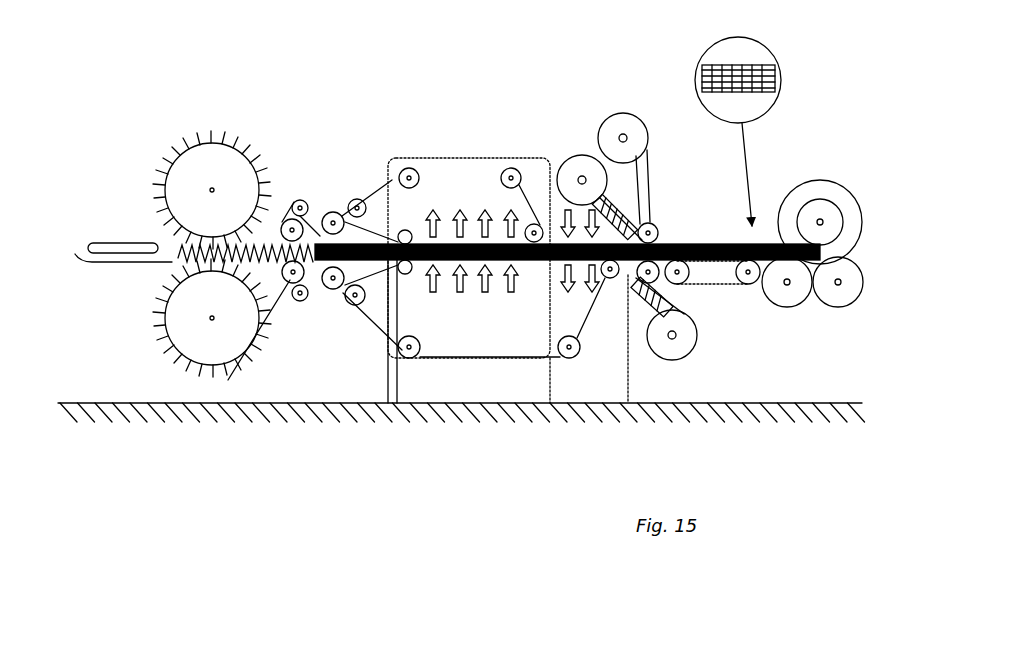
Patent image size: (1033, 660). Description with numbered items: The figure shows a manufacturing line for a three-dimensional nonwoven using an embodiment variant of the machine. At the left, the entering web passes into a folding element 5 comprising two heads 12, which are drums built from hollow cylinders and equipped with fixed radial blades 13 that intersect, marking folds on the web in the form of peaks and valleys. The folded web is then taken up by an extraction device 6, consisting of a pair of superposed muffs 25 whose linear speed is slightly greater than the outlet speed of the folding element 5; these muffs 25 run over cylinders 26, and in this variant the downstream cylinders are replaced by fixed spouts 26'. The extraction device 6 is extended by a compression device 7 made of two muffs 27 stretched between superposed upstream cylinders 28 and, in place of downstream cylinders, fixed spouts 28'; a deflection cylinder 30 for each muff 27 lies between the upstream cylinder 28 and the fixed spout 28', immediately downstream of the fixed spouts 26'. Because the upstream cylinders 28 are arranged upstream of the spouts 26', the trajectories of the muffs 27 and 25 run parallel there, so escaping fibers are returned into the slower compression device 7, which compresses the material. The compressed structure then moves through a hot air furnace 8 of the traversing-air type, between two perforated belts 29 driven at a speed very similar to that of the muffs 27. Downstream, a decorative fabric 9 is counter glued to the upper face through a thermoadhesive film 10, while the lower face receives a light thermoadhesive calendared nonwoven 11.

The folding element 5 is at (220, 108).
The extraction device 6 is at (301, 170).
The compression device 7 is at (337, 200).
The hot air furnace 8 is at (482, 124).
The decorative fabric 9 is at (623, 122).
The thermoadhesive film 10 is at (580, 160).
The light thermoadhesive calendared nonwoven 11 is at (680, 342).
The heads 12 is at (198, 165).
The fixed radial blades 13 is at (158, 170).
The muffs 25 is at (292, 400).
The cylinders 26 is at (237, 391).
The fixed spouts 26' is at (294, 402).
The muffs 27 is at (377, 255).
The upstream cylinders 28 is at (322, 382).
The fixed spouts 28' is at (402, 380).
The belts 29 is at (446, 158).
The deflection cylinder 30 is at (342, 212).